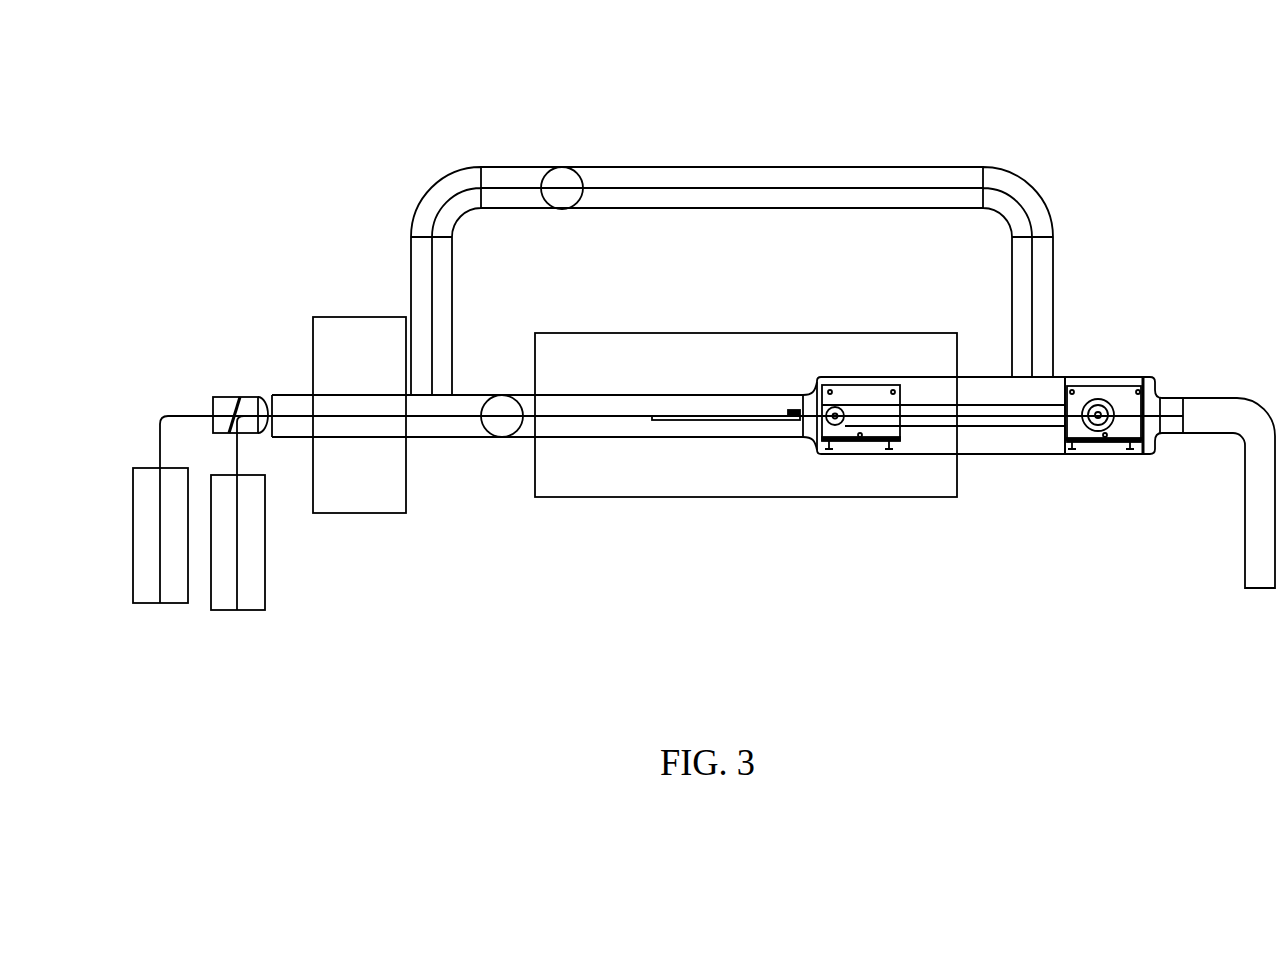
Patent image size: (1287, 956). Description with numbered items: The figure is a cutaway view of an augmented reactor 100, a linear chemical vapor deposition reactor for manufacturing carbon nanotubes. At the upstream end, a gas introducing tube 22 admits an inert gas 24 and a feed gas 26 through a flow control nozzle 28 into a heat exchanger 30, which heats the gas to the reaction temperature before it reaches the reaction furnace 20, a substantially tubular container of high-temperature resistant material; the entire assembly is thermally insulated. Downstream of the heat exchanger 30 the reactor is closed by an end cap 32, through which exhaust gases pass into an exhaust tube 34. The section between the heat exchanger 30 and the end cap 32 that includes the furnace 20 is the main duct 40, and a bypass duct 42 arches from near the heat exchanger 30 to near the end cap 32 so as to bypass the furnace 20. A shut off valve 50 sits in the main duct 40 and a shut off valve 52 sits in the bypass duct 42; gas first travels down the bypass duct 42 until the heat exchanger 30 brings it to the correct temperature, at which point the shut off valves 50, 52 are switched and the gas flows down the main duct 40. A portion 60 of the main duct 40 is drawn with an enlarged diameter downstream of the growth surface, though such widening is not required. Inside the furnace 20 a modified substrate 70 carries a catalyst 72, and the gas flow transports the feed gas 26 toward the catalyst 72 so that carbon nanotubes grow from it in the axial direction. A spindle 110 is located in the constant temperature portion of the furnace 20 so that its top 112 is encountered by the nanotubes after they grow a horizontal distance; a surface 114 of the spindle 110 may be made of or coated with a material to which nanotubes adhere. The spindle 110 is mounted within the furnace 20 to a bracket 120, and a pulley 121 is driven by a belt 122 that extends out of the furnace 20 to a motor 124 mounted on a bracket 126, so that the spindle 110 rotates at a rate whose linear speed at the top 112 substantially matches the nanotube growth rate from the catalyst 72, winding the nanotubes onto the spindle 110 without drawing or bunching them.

The augmented reactor 100 is at (1046, 116).
The reaction furnace 20 is at (682, 497).
The gas introducing tube 22 is at (280, 437).
The inert gas 24 is at (133, 535).
The feed gas 26 is at (265, 578).
The flow control nozzle 28 is at (250, 397).
The heat exchanger 30 is at (380, 513).
The end cap 32 is at (1175, 398).
The exhaust tube 34 is at (1243, 556).
The main duct 40 is at (522, 437).
The bypass duct 42 is at (645, 167).
The shut off valve 50 is at (493, 425).
The shut off valve 52 is at (562, 172).
The portion of the main duct 60 is at (998, 454).
The modified substrate 70 is at (665, 420).
The catalyst 72 is at (791, 409).
The spindle 110 is at (833, 423).
The top of the spindle 112 is at (834, 406).
The surface of spindle 114 is at (833, 417).
The bracket 120 is at (886, 390).
The pulley 121 is at (842, 420).
The belt 122 is at (943, 426).
The motor 124 is at (1095, 430).
The bracket 126 is at (1122, 430).